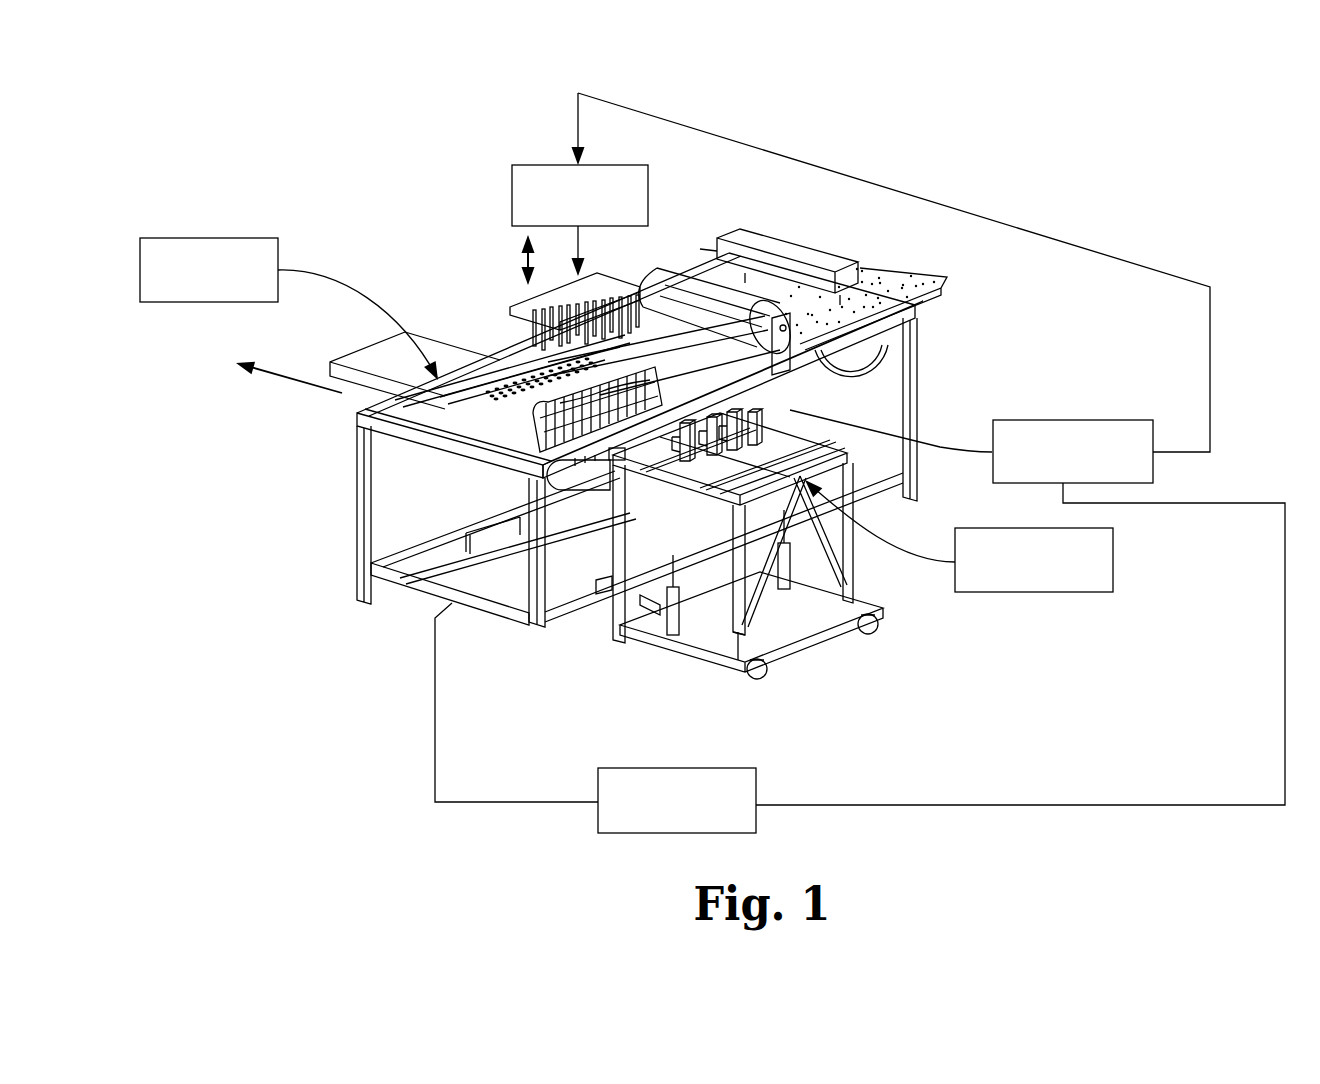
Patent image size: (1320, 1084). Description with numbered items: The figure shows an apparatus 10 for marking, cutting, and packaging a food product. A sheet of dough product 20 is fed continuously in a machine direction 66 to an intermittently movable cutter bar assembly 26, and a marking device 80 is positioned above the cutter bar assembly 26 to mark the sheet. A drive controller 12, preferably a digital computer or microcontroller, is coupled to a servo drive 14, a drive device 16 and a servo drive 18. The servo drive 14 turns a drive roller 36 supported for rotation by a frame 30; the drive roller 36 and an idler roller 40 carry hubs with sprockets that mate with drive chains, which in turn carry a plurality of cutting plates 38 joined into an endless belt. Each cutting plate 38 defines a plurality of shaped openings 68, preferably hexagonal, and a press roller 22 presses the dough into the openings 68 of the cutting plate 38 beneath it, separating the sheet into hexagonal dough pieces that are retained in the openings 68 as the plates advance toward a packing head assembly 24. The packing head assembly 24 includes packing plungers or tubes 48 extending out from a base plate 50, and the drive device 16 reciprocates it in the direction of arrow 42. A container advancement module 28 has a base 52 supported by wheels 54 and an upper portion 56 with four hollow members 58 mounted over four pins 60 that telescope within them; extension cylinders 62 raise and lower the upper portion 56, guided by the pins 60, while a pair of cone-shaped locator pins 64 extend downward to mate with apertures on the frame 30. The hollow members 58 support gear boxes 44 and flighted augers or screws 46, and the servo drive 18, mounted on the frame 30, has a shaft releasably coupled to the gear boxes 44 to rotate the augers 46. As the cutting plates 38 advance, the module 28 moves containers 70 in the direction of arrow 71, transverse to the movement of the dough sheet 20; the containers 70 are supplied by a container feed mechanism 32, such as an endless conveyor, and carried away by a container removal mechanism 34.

The apparatus 10 is at (426, 152).
The drive controller 12 is at (1153, 476).
The servo drive 14 is at (758, 787).
The drive device 16 is at (648, 192).
The servo drive 18 is at (825, 436).
The sheet of dough product 20 is at (949, 278).
The press roller 22 is at (693, 268).
The packing head assembly 24 is at (516, 297).
The cutter bar assembly 26 is at (880, 386).
The container advancement module 28 is at (864, 577).
The frame 30 is at (354, 450).
The container feed mechanism 32 is at (1113, 578).
The container removal mechanism 34 is at (221, 238).
The drive roller 36 is at (535, 505).
The cutting plates 38 is at (660, 365).
The idler roller 40 is at (780, 405).
The arrow 42 is at (527, 262).
The gear boxes 44 is at (583, 545).
The flighted augers or screws 46 is at (616, 465).
The packing plungers or tubes 48 is at (532, 323).
The base plate 50 is at (593, 279).
The base 52 is at (812, 647).
The wheels 54 is at (880, 632).
The upper portion 56 is at (668, 637).
The hollow members 58 is at (731, 617).
The pins 60 is at (735, 652).
The extension cylinders 62 is at (658, 618).
The locator pins 64 is at (587, 593).
The machine direction arrow 66 is at (906, 252).
The cutting openings 68 is at (515, 370).
The containers 70 is at (545, 420).
The arrow 71 is at (300, 384).
The marking device 80 is at (802, 242).